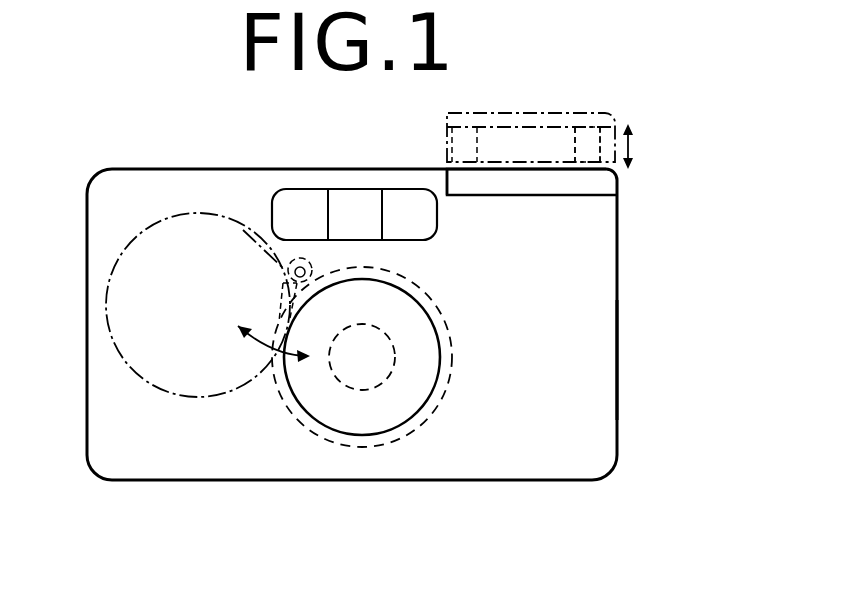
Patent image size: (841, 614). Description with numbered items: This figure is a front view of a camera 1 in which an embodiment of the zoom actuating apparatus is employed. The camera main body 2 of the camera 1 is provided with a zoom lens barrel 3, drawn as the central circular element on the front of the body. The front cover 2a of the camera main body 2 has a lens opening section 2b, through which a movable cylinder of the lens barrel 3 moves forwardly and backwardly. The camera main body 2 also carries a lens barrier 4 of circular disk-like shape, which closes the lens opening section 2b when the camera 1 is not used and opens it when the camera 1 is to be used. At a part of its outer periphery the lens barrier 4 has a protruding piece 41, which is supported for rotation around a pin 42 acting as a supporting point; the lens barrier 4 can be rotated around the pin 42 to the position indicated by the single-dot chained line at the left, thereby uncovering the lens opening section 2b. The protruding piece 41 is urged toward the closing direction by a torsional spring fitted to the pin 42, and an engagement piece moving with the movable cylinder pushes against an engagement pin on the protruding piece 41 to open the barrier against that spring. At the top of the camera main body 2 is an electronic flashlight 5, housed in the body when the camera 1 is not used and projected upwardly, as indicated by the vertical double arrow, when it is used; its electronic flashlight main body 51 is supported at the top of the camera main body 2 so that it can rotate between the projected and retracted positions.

The camera 1 is at (190, 123).
The camera main body 2 is at (327, 166).
The front cover 2a is at (608, 353).
The lens opening section 2b is at (299, 386).
The zoom lens barrel 3 is at (428, 388).
The lens barrier 4 is at (168, 230).
The protruding piece 41 is at (282, 290).
The pin 42 is at (292, 270).
The electronic flashlight 5 is at (447, 131).
The electronic flashlight main body 51 is at (598, 112).